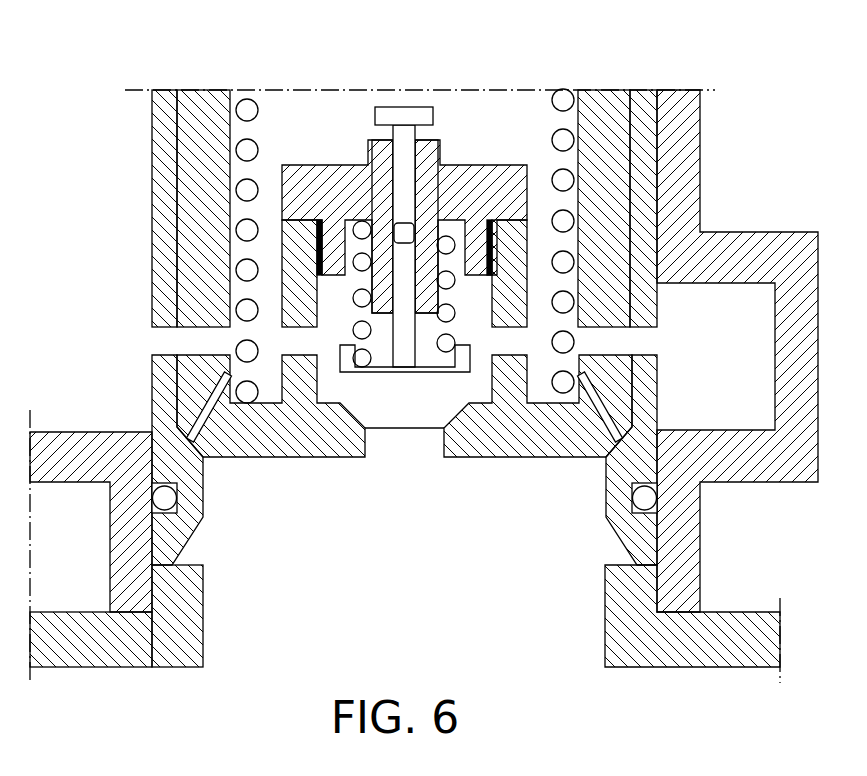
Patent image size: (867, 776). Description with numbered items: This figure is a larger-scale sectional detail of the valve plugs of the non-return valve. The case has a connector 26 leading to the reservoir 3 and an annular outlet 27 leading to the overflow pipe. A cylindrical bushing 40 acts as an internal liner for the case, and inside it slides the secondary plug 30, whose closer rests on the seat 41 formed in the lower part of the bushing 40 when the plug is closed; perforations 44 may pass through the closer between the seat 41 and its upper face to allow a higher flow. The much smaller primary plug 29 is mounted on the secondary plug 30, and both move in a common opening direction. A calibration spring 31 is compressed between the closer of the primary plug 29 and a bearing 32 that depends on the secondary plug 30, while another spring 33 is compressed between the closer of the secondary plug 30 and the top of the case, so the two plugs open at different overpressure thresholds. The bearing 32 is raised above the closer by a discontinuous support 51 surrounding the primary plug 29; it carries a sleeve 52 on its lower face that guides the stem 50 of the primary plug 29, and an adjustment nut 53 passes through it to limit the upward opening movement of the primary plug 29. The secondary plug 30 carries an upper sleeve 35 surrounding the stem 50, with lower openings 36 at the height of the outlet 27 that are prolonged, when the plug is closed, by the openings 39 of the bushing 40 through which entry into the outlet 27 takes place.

The reservoir 3 is at (707, 648).
The connector 26 is at (200, 540).
The annular outlet 27 is at (742, 332).
The primary plug 29 is at (409, 443).
The secondary plug 30 is at (307, 470).
The calibration spring 31 is at (452, 297).
The bearing 32 is at (497, 177).
The spring 33 is at (248, 106).
The upper sleeve 35 is at (195, 165).
The openings 36 is at (193, 342).
The openings 39 is at (612, 343).
The bushing 40 is at (643, 157).
The seat 41 is at (218, 448).
The perforations 44 is at (237, 430).
The stem 50 is at (403, 262).
The discontinuous support 51 is at (298, 246).
The sleeve 52 is at (385, 267).
The adjustment nut 53 is at (426, 93).